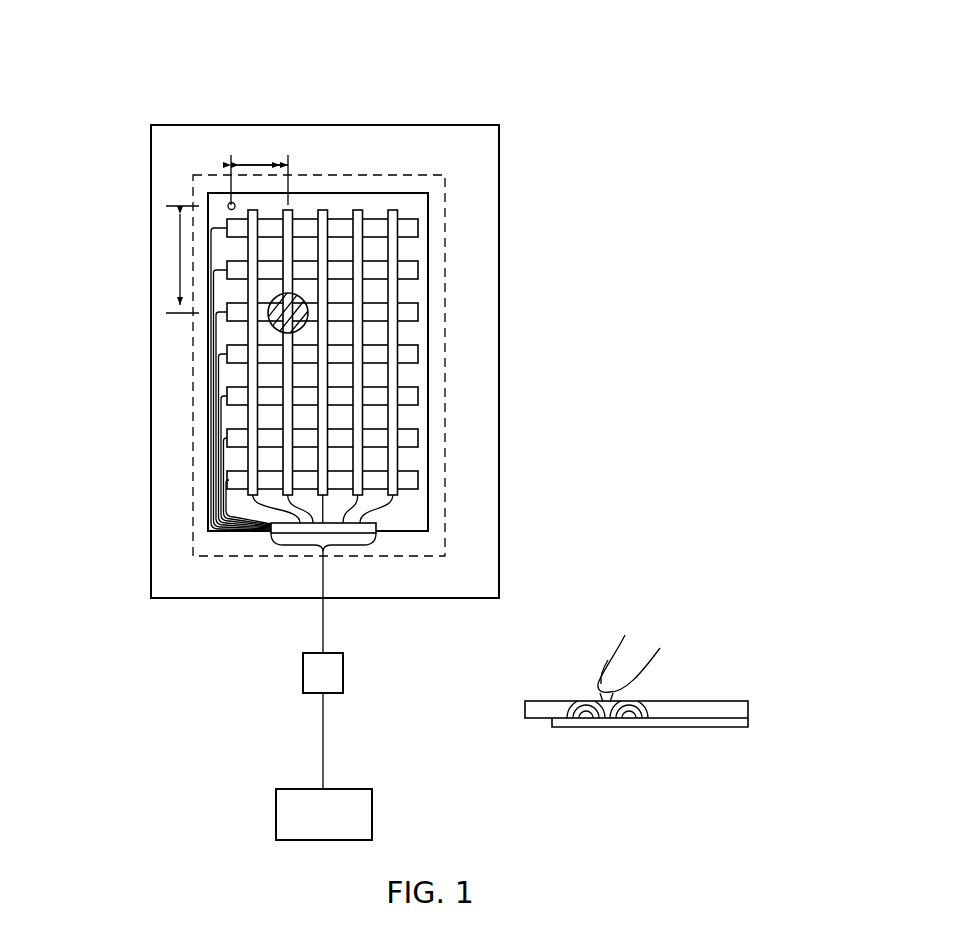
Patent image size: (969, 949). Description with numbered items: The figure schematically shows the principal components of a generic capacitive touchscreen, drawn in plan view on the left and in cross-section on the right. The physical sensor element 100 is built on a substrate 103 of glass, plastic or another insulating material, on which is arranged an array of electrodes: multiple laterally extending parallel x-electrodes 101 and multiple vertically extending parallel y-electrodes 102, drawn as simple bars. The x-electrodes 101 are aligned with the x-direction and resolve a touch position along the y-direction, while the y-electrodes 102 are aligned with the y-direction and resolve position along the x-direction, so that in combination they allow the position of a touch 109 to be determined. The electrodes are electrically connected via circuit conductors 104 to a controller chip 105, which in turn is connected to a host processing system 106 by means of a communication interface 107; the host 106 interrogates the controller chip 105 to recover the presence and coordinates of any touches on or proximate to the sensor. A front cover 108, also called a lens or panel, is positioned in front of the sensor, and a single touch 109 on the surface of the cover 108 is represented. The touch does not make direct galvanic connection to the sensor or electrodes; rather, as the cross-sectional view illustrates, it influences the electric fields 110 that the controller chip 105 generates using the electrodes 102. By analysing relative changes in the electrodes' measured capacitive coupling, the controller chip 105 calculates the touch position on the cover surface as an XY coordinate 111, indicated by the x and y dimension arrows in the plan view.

The sensor element 100 is at (447, 332).
The x-electrodes 101 is at (418, 229).
The y-electrodes 102 is at (328, 212).
The substrate 103 is at (428, 483).
The circuit conductors 104 is at (322, 632).
The controller chip 105 is at (302, 678).
The host processing system 106 is at (276, 820).
The communication interface 107 is at (322, 738).
The front cover 108 is at (480, 125).
The touch 109 is at (270, 325).
The electric fields 110 is at (565, 703).
The XY coordinate 111 is at (180, 203).